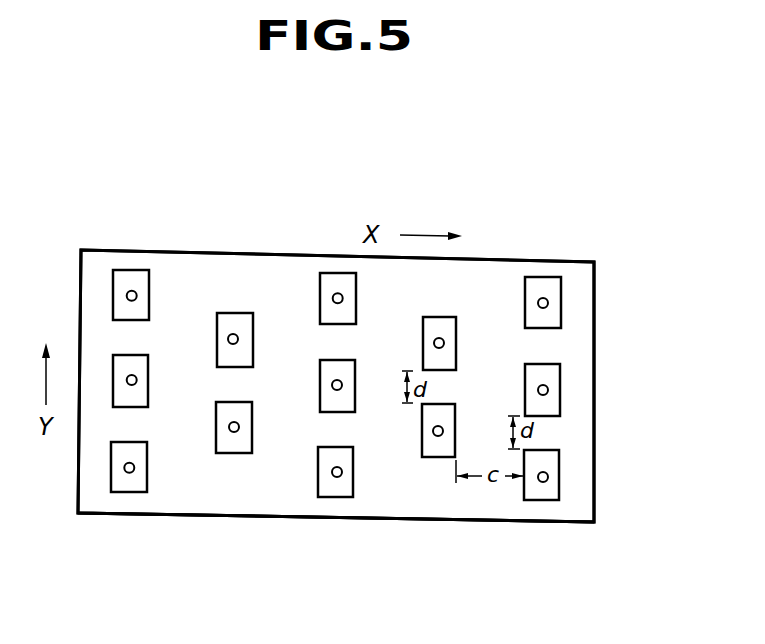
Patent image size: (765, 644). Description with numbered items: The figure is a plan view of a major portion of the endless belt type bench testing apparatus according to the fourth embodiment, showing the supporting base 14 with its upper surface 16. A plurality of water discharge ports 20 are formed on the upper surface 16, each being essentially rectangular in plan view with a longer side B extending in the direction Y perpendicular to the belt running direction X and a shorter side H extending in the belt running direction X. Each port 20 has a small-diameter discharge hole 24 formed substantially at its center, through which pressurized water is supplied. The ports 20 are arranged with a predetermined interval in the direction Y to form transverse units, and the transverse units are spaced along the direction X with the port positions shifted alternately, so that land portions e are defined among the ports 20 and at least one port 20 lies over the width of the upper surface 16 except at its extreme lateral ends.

The supporting base 14 is at (326, 244).
The upper surface 16 is at (220, 252).
The water discharge port 20 is at (537, 500).
The discharge hole 24 is at (548, 391).
The shorter side H is at (332, 498).
The longer side B is at (318, 480).
The land portion e is at (415, 503).